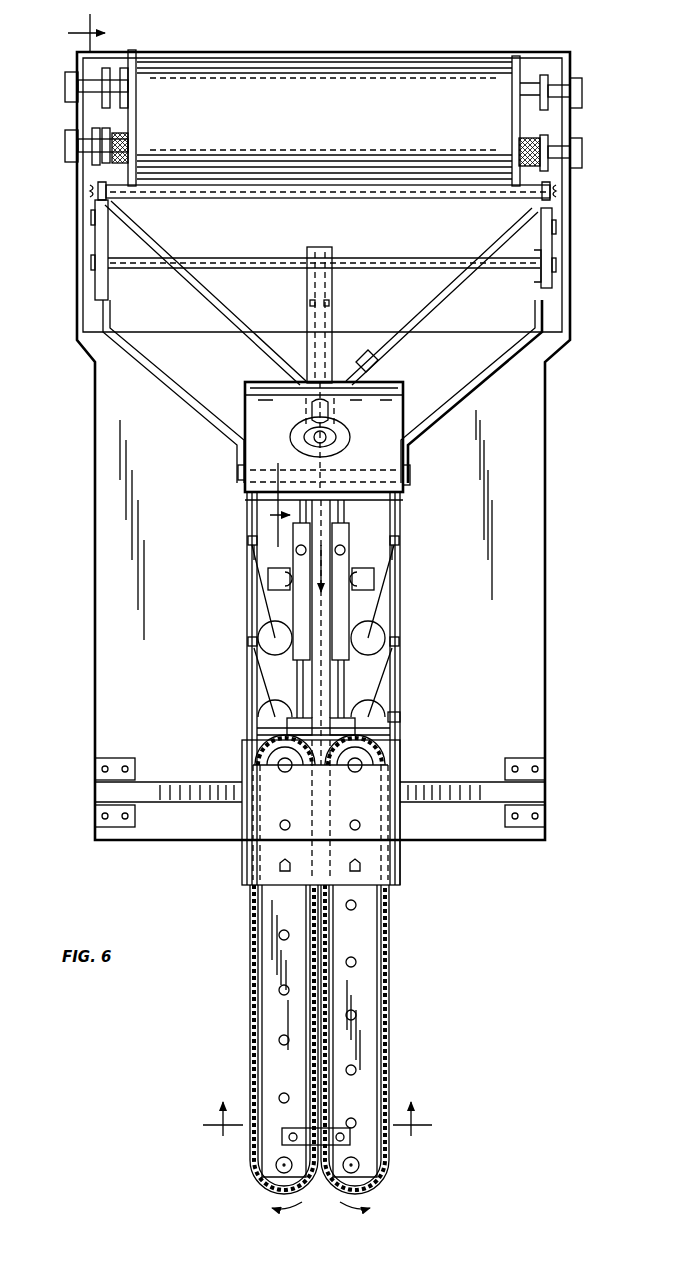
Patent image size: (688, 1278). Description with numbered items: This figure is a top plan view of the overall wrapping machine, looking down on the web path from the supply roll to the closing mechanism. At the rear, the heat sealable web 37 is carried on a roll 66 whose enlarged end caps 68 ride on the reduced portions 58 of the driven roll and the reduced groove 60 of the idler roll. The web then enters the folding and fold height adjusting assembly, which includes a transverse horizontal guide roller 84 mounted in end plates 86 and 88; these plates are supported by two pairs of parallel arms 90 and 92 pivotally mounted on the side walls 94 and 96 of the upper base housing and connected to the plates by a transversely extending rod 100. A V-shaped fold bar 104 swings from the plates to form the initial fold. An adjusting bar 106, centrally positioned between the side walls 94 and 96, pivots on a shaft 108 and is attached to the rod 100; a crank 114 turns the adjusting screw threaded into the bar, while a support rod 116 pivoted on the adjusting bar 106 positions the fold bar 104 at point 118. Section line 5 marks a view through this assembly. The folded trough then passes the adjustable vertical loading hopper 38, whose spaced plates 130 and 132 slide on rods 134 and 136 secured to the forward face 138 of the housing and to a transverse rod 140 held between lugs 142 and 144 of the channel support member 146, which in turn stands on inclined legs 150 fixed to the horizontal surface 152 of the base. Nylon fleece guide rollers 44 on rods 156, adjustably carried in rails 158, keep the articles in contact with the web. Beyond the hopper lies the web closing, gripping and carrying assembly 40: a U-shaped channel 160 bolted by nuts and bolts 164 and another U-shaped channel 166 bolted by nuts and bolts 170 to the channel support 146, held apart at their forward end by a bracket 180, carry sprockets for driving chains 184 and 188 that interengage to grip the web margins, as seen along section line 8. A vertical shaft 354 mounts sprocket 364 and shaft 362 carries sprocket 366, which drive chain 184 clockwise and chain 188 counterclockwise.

The section line 5- 5 is at (194, 303).
The section line 8- 8 is at (252, 1119).
The heat sealable web 37 is at (332, 678).
The adjustable vertical loading hopper 38 is at (288, 600).
The web closing, gripping and carrying assembly 40 is at (329, 1047).
The nylon fleece guide rollers 44 is at (248, 641).
The reduced portions of driven roll 58 is at (527, 138).
The reduced groove of idler roll 60 is at (530, 78).
The roll 66 is at (322, 75).
The enlarged end caps 68 is at (131, 50).
The transverse horizontal guide roller 84 is at (222, 198).
The end plate 86 is at (545, 238).
The end plate 88 is at (100, 228).
The parallel arms 90 is at (483, 365).
The parallel arms 92 is at (157, 360).
The side wall of upper base housing 94 is at (403, 412).
The side wall of upper base housing 96 is at (245, 398).
The transversely extending rod 100 is at (266, 262).
The V-shaped fold bar 104 is at (198, 292).
The adjusting bar 106 is at (327, 289).
The shaft 108 is at (409, 478).
The crank 114 is at (292, 437).
The support rod 116 is at (345, 365).
The connection point 118 is at (372, 369).
The hopper plate 130 is at (297, 541).
The hopper plate 132 is at (349, 532).
The rod 134 is at (342, 516).
The rod 136 is at (296, 499).
The forward face of upper base housing 138 is at (400, 500).
The transverse rod 140 is at (382, 718).
The lug 142 is at (400, 722).
The lug 144 is at (256, 715).
The channel support member 146 is at (320, 800).
The inclined legs 150 is at (160, 790).
The horizontal surface of base 152 is at (508, 631).
The rod 156 is at (266, 624).
The rails 158 is at (246, 531).
The U-shaped channel 160 is at (252, 556).
The nuts and bolts 164 is at (282, 845).
The U-shaped channel 166 is at (356, 1026).
The nuts and bolts 170 is at (356, 845).
The bracket 180 is at (333, 1128).
The driving chain 184 is at (252, 1048).
The driving chain 188 is at (388, 1059).
The vertical shaft 354 is at (285, 772).
The shaft 362 is at (353, 772).
The sprocket 364 is at (268, 752).
The sprocket 366 is at (356, 752).